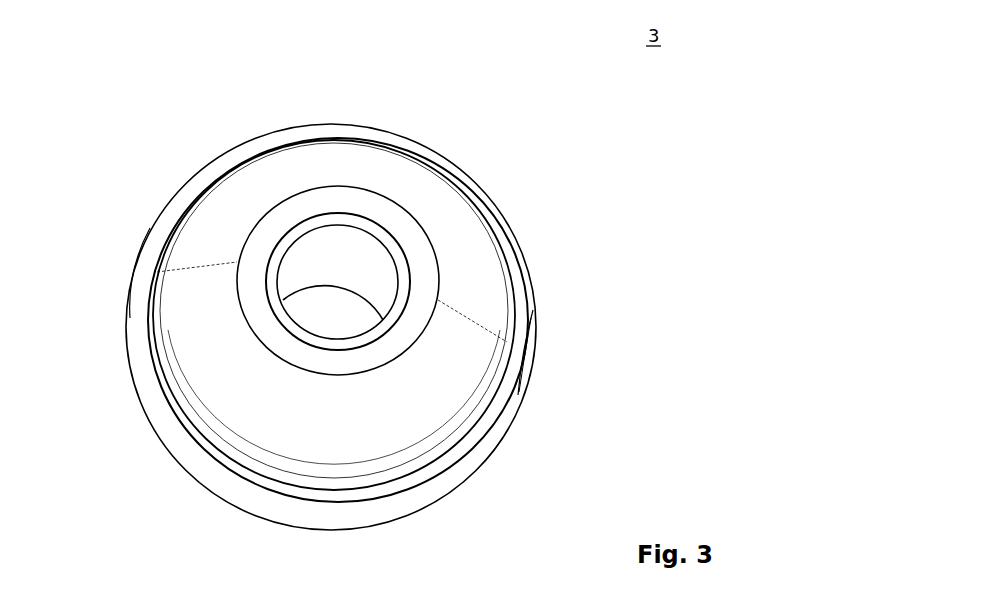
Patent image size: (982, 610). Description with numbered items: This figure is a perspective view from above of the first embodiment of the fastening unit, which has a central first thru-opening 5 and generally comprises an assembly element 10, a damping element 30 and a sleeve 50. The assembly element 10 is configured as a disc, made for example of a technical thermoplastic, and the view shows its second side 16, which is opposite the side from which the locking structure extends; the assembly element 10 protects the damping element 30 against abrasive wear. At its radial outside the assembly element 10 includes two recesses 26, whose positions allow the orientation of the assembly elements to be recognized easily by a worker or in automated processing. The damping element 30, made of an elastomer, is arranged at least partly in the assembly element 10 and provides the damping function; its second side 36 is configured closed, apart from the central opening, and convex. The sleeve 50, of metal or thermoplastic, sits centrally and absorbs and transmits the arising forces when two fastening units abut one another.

The assembly element 10 is at (333, 128).
The second side 16 is at (418, 152).
The damping element 30 is at (283, 170).
The second side 36 is at (462, 233).
The sleeve 50 is at (293, 235).
The first thru-opening 5 is at (316, 304).
The recesses 26 is at (135, 287).